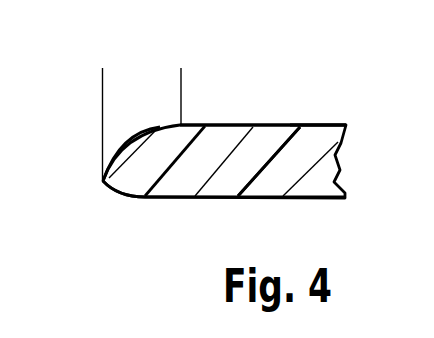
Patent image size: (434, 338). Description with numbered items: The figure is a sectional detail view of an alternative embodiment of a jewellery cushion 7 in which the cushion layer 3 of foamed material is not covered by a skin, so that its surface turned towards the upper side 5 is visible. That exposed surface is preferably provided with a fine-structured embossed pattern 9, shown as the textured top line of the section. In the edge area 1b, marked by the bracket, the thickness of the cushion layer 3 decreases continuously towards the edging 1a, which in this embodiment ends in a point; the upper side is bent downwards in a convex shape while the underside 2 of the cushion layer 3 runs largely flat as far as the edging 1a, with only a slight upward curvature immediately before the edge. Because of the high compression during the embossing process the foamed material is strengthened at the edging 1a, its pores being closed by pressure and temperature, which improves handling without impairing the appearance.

The edging 1a is at (101, 181).
The edge area 1b is at (181, 68).
The underside 2 is at (200, 198).
The cushion layer 3 is at (277, 180).
The upper side 5 is at (263, 124).
The jewellery cushion 7 is at (303, 116).
The fine-structured embossed pattern 9 is at (215, 124).